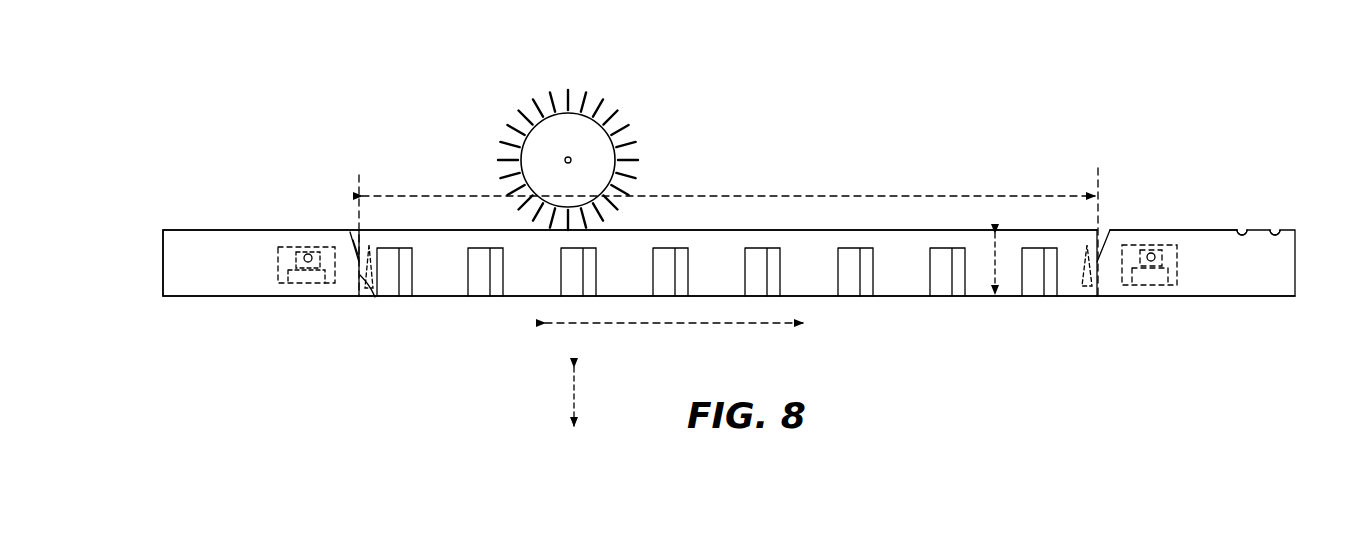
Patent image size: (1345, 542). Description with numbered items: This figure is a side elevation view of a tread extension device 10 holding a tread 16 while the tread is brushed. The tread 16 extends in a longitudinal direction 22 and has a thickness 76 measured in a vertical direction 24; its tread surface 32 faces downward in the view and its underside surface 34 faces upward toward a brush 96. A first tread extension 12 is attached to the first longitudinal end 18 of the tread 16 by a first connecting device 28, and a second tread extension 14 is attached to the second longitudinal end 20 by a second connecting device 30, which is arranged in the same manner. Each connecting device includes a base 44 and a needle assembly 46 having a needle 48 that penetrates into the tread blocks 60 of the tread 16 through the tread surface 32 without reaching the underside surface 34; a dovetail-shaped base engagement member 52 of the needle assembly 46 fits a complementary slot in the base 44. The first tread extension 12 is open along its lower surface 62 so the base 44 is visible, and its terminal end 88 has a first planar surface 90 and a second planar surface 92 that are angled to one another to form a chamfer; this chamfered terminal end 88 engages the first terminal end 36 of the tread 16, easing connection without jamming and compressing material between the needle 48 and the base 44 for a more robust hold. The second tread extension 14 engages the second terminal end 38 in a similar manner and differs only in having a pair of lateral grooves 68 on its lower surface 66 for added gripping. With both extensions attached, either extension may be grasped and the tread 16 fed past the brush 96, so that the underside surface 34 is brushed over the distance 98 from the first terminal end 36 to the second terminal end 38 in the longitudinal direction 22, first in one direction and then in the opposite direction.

The tread extension device 10 is at (1247, 92).
The first tread extension 12 is at (630, 263).
The second tread extension 14 is at (1196, 263).
The tread 16 is at (453, 282).
The first longitudinal end 18 is at (392, 242).
The second longitudinal end 20 is at (1072, 266).
The longitudinal direction 22 is at (660, 323).
The vertical direction 24 is at (572, 396).
The first connecting device 28 is at (240, 230).
The second connecting device 30 is at (1111, 232).
The tread surface 32 is at (900, 297).
The underside surface 34 is at (801, 228).
The first terminal end 36 is at (357, 247).
The second terminal end 38 is at (1098, 275).
The base 44 is at (247, 297).
The needle assembly 46 is at (343, 297).
The needle 48 is at (368, 296).
The base engagement member 52 is at (305, 297).
The tread blocks 60 is at (433, 280).
The lower surface 62 is at (178, 228).
The lower surface 66 is at (1195, 228).
The lateral grooves 68 is at (1274, 231).
The thickness 76 is at (994, 270).
The terminal end 88 is at (357, 258).
The second planar surface 92 is at (356, 249).
The first planar surface 90 is at (375, 297).
The brush 96 is at (596, 116).
The distance 98 is at (894, 196).